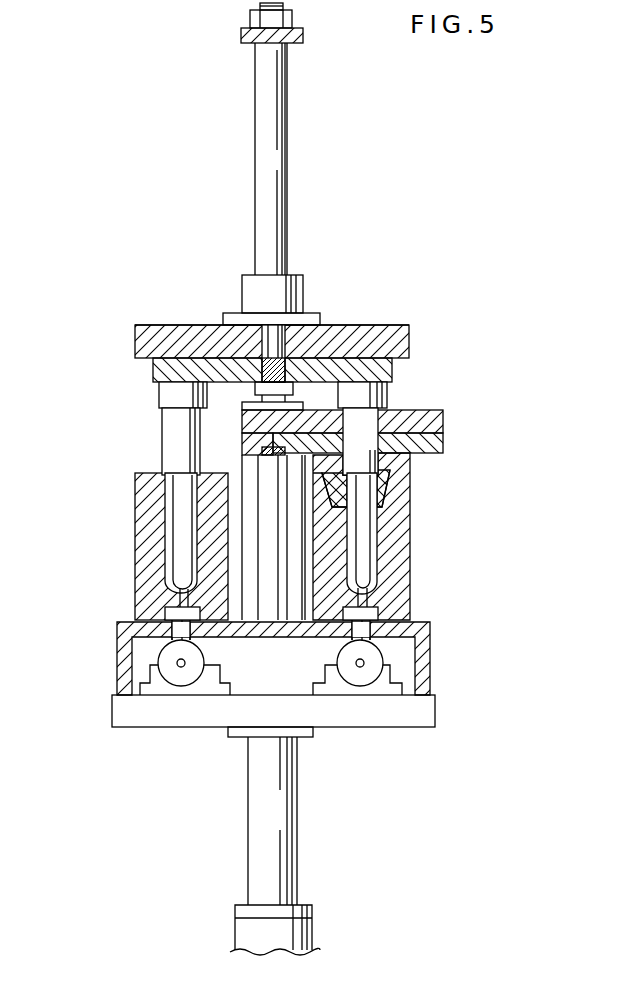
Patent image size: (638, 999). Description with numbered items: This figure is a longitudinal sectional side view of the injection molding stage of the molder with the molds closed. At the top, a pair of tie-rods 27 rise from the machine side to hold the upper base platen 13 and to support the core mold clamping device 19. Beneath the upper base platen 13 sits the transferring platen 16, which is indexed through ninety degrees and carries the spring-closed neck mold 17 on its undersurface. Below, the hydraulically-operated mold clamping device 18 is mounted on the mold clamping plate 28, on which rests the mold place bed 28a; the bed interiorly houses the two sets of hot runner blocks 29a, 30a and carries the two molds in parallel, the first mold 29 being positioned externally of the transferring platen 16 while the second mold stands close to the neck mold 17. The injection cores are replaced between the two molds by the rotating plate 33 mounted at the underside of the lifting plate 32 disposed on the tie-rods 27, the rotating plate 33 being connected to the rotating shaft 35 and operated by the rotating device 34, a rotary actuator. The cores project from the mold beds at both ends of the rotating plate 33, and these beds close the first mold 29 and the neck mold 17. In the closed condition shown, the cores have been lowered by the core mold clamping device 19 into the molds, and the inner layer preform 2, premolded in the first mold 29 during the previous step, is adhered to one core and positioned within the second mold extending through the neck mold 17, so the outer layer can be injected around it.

The inner layer preform 2 is at (395, 532).
The upper base platen 13 is at (410, 415).
The transferring platen 16 is at (430, 440).
The neck mold 17 is at (387, 477).
The mold clamping device 18 is at (243, 928).
The core mold clamping device 19 is at (208, 322).
The tie-rod 27 is at (268, 165).
The mold clamping plate 28 is at (172, 717).
The mold place bed 28a is at (125, 633).
The first mold 29 is at (140, 490).
The hot runner block 29a is at (158, 663).
The hot runner block 30a is at (362, 675).
The lifting plate 32 is at (145, 338).
The rotating plate 33 is at (158, 370).
The rotating device 34 is at (283, 288).
The rotating shaft 35 is at (277, 370).